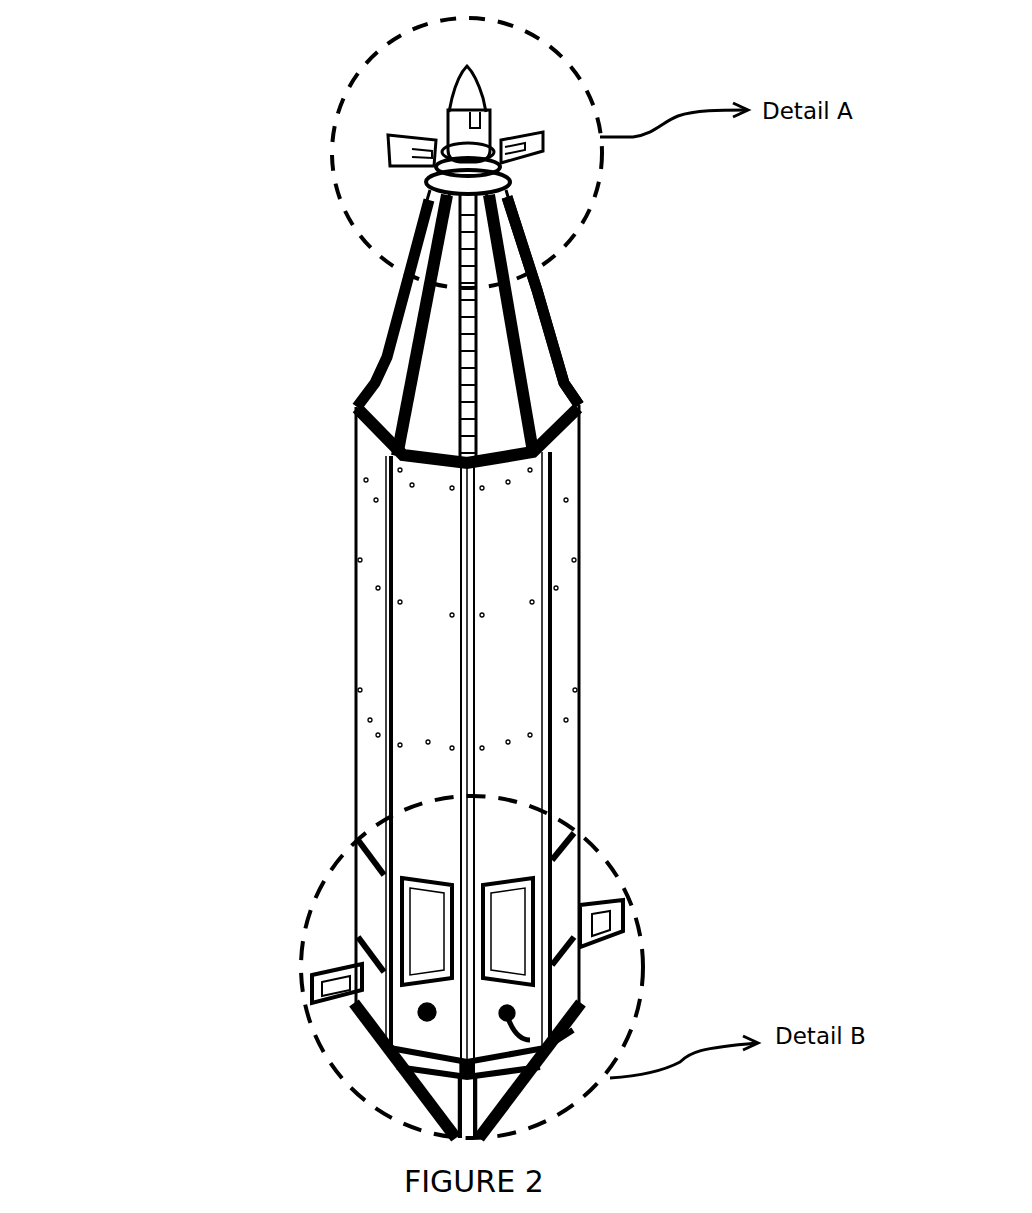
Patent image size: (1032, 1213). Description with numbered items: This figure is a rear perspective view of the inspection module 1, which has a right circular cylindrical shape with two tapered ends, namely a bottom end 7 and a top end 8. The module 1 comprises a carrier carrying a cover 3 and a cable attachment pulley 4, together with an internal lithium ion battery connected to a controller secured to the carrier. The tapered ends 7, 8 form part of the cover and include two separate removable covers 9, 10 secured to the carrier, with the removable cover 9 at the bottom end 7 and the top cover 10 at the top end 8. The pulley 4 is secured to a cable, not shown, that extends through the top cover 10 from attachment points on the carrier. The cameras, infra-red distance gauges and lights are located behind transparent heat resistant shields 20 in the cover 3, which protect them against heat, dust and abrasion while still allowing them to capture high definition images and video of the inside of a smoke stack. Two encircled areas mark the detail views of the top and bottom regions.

The module 1 is at (170, 318).
The cover 3 is at (512, 685).
The cable attachment pulley 4 is at (470, 93).
The bottom end 7 is at (382, 1080).
The top end 8 is at (372, 309).
The removable cover 9 is at (495, 1082).
The top cover 10 is at (535, 367).
The transparent heat resistant shields 20 is at (512, 912).